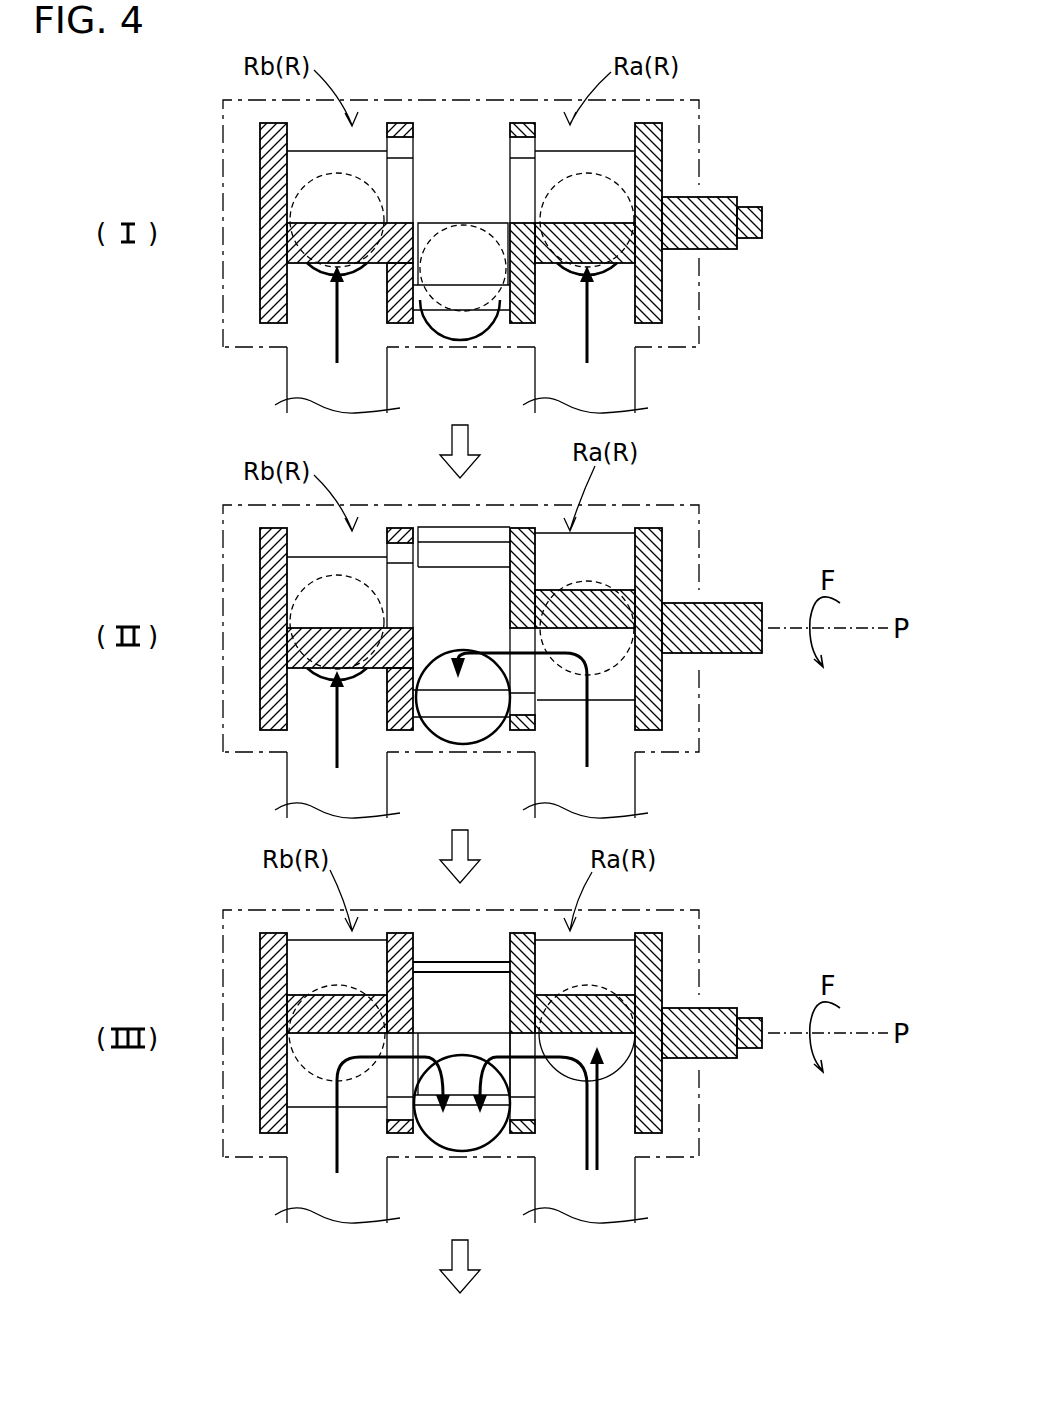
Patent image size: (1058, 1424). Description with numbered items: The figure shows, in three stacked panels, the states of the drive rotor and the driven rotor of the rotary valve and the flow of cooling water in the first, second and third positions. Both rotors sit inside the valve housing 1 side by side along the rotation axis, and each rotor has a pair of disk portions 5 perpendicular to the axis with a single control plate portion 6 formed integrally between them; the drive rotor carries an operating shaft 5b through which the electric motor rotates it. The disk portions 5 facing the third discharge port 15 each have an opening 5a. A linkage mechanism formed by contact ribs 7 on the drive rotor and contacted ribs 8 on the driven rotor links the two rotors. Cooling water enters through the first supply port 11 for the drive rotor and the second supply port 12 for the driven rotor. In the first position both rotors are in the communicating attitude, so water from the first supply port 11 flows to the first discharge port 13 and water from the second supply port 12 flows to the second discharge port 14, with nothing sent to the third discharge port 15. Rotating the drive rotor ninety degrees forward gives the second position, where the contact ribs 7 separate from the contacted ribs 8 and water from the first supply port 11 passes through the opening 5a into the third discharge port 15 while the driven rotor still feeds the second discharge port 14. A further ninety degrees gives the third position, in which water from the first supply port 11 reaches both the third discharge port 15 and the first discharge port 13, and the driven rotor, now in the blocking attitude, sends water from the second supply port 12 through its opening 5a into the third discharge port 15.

The valve housing 1 is at (225, 128).
The disk portion 5 is at (400, 122).
The opening 5a is at (517, 168).
The operating shaft 5b is at (720, 200).
The control plate portion 6 is at (337, 160).
The contact rib 7 is at (467, 232).
The contacted rib 8 is at (447, 300).
The first supply port 11 is at (635, 372).
The second supply port 12 is at (287, 371).
The first discharge port 13 is at (600, 265).
The second discharge port 14 is at (325, 265).
The third discharge port 15 is at (455, 302).